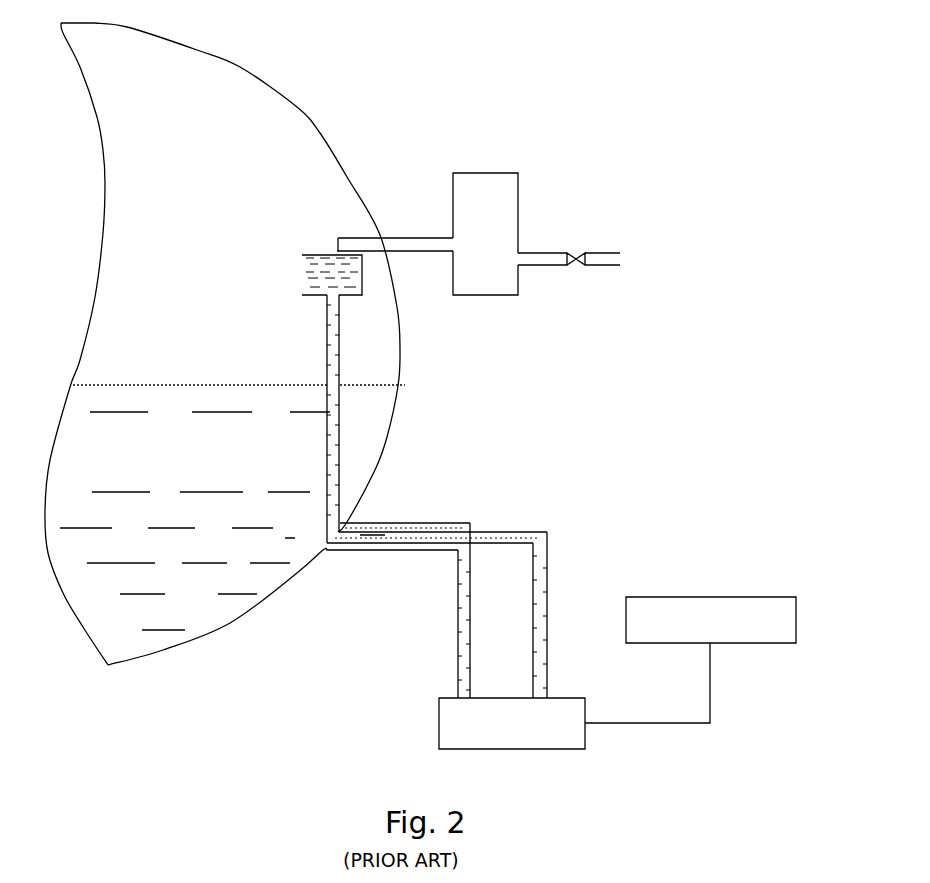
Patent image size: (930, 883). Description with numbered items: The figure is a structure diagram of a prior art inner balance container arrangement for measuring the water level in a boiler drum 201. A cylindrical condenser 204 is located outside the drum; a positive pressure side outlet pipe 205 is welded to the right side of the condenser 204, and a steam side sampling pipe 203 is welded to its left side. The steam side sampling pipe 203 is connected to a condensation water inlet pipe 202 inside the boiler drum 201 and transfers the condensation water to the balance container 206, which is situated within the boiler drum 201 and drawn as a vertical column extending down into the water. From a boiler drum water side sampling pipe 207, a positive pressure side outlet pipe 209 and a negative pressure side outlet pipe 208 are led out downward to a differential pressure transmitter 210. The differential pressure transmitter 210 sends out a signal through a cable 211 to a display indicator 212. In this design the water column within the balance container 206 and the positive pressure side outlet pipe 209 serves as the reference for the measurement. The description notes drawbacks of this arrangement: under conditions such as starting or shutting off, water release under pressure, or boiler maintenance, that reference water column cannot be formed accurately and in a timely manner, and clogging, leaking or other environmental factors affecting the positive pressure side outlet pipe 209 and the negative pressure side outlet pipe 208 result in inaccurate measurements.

The boiler drum 201 is at (297, 145).
The condensation water inlet pipe 202 is at (342, 237).
The steam side sampling pipe 203 is at (417, 237).
The cylindrical condenser 204 is at (518, 191).
The positive pressure side outlet pipe 205 is at (603, 260).
The balance container 206 is at (388, 322).
The boiler drum water side sampling pipe 207 is at (410, 522).
The negative pressure side outlet pipe 208 is at (457, 610).
The positive pressure side outlet pipe 209 is at (547, 620).
The differential pressure transmitter 210 is at (585, 706).
The cable 211 is at (682, 724).
The display indicator 212 is at (698, 607).